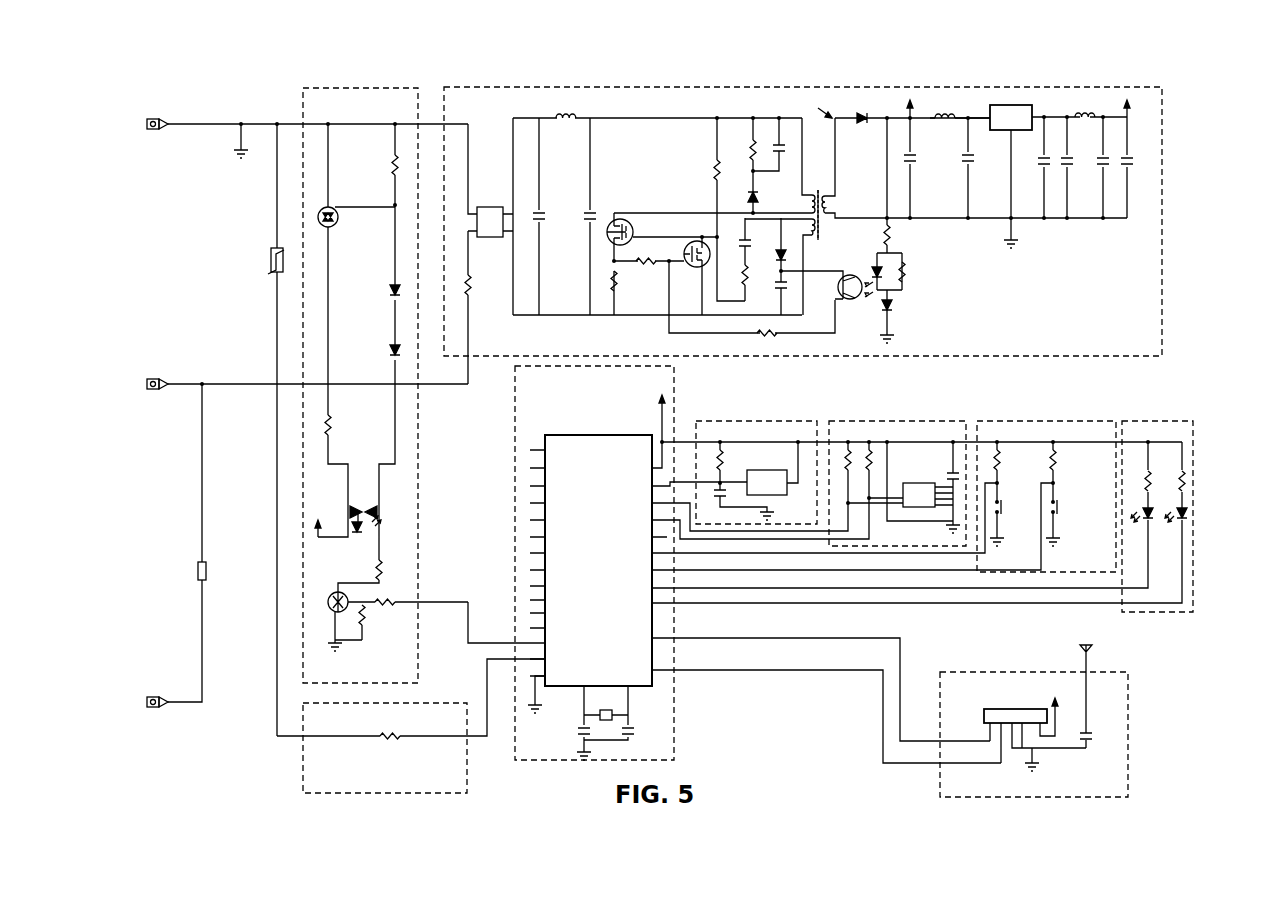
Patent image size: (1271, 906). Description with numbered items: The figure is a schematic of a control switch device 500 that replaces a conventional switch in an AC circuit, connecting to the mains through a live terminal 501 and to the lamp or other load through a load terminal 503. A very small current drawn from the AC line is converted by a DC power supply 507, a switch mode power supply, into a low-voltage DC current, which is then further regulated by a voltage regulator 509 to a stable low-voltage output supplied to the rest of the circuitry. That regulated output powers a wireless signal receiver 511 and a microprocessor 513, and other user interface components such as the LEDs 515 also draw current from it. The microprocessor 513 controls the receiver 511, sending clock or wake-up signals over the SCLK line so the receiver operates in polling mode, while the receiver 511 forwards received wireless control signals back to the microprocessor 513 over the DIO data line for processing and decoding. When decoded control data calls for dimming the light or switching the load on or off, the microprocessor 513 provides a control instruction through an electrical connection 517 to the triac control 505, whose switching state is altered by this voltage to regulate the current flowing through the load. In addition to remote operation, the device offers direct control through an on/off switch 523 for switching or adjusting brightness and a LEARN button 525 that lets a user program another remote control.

The control switch device 500 is at (689, 427).
The live terminal 501 is at (159, 123).
The load terminal 503 is at (164, 383).
The triac control 505 is at (350, 98).
The DC power supply 507 is at (865, 88).
The voltage regulator 509 is at (1015, 105).
The wireless signal receiver 511 is at (1115, 672).
The microprocessor 513 is at (655, 688).
The LEDs 515 is at (1188, 506).
The electrical connection 517 is at (456, 600).
The on/off switch 523 is at (1056, 497).
The LEARN button 525 is at (1003, 497).